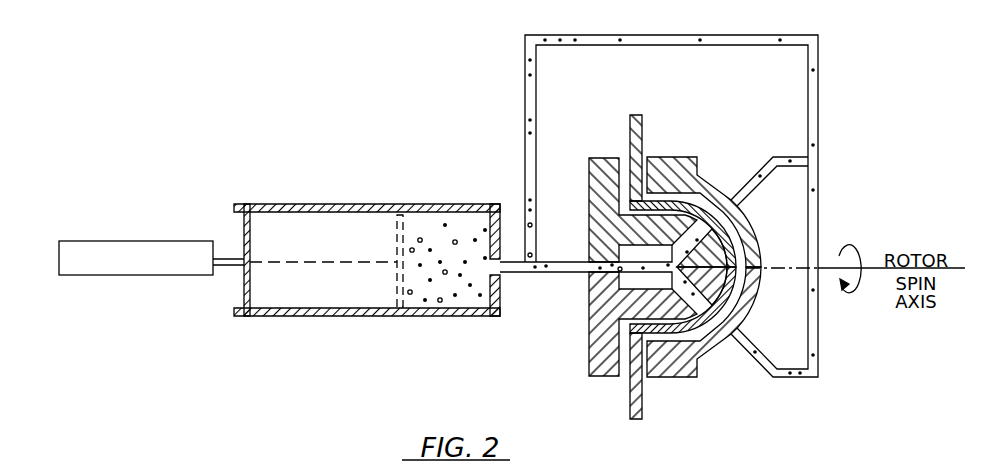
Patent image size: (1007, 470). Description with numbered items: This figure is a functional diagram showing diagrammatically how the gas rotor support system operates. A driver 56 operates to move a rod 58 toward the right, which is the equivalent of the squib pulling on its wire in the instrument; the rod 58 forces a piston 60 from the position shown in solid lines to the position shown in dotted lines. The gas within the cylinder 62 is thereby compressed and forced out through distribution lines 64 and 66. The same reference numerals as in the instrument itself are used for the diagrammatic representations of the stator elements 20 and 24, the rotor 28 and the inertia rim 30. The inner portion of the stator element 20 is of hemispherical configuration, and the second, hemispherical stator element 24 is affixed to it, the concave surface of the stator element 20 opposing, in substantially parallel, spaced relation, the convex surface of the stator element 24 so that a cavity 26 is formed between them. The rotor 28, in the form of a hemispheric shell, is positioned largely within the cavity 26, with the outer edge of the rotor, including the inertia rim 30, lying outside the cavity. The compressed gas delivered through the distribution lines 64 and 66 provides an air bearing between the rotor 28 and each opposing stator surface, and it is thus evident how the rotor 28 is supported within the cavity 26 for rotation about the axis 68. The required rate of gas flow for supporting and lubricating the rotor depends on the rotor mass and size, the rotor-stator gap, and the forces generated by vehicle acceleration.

The stator element 20 is at (710, 178).
The hemispherical stator element 24 is at (589, 320).
The cavity 26 is at (740, 240).
The rotor element 28 is at (748, 316).
The inertia rim 30 is at (642, 404).
The driver 56 is at (135, 241).
The rod 58 is at (228, 258).
The piston 60 is at (250, 286).
The cylinder 62 is at (325, 204).
The distribution line 64 is at (512, 262).
The distribution line 66 is at (536, 90).
The axis 68 is at (872, 268).